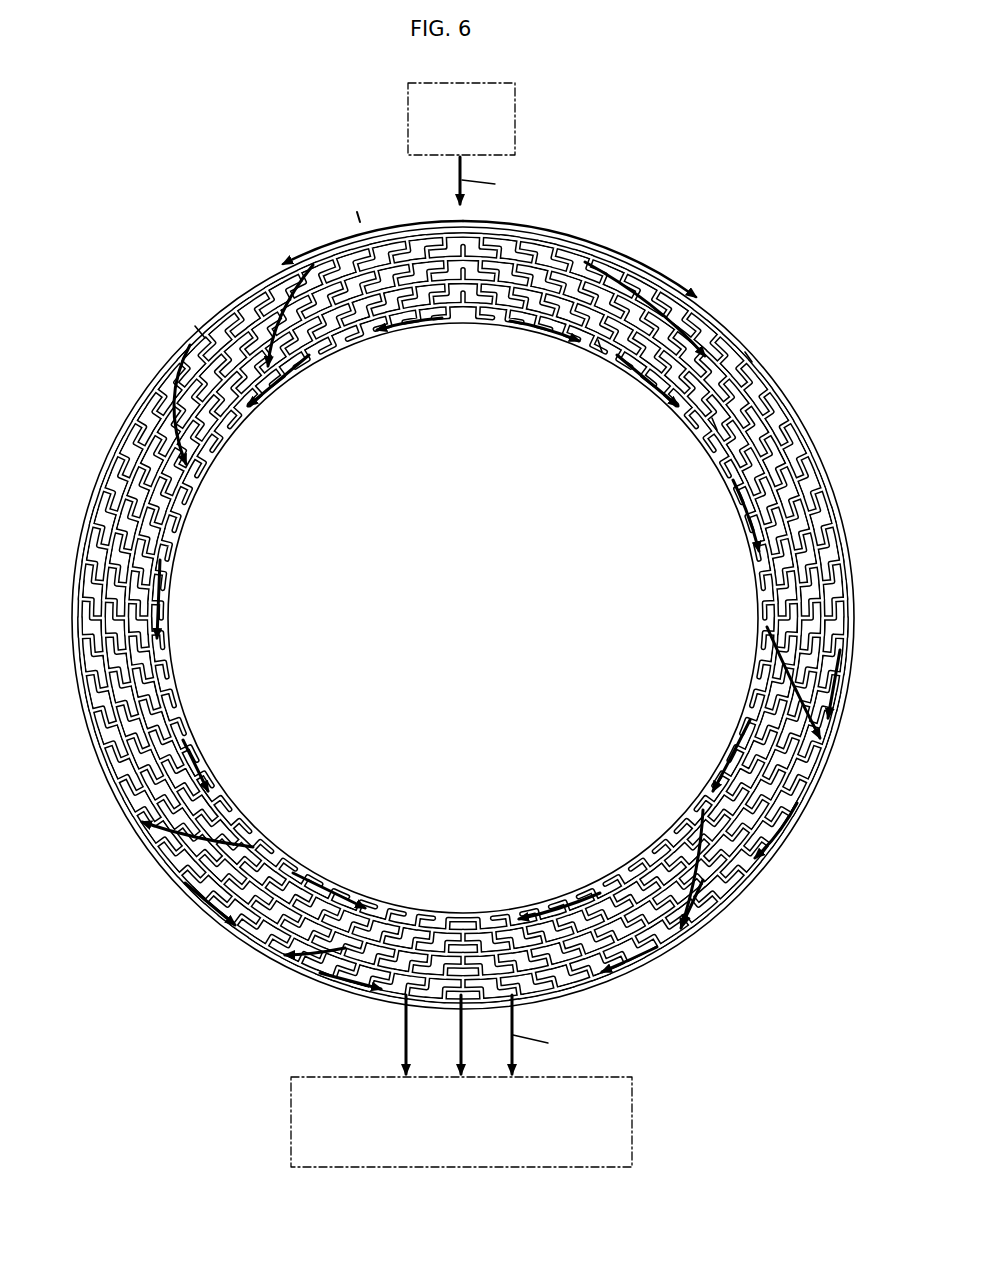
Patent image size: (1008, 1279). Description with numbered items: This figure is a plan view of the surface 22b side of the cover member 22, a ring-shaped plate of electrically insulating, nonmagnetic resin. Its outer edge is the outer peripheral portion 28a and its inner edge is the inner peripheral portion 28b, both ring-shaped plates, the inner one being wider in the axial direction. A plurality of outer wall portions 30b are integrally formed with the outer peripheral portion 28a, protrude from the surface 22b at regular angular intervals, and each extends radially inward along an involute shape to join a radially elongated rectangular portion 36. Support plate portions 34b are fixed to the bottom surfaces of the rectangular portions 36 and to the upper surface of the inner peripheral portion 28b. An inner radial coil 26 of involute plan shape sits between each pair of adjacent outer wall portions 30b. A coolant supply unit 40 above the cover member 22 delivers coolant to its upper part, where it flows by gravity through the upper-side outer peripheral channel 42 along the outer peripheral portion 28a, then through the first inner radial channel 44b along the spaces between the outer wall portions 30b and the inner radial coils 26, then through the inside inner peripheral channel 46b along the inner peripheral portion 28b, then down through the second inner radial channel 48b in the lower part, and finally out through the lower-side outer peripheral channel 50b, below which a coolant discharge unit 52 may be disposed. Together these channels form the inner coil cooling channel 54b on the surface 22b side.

The cover member 22 is at (679, 159).
The coolant supply unit 40 is at (515, 107).
The coolant discharge unit 52 is at (632, 1114).
The inner coil cooling channel 54b is at (357, 210).
The upper-side outer peripheral channel 42 is at (330, 244).
The inner radial coil 26 is at (200, 330).
The first inner radial channel 44b is at (272, 322).
The outer peripheral portion 28a is at (172, 367).
The outer wall portion 30b is at (745, 352).
The rectangular portion 36 is at (463, 290).
The inside inner peripheral channel 46b is at (265, 396).
The inner peripheral portion 28b is at (602, 352).
The surface 22b is at (717, 430).
The support plate portion 34b is at (178, 522).
The second inner radial channel 48b is at (175, 855).
The lower-side outer peripheral channel 50b is at (350, 985).